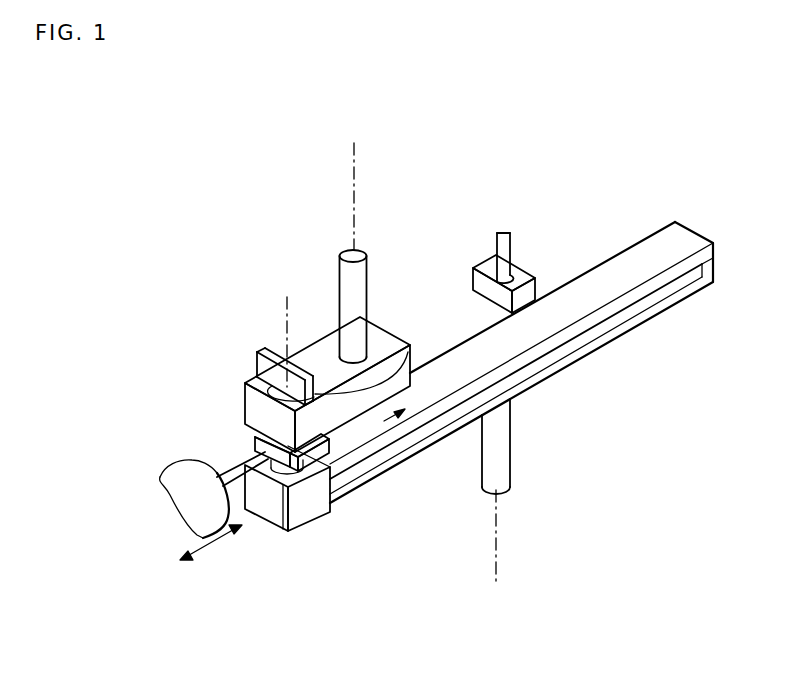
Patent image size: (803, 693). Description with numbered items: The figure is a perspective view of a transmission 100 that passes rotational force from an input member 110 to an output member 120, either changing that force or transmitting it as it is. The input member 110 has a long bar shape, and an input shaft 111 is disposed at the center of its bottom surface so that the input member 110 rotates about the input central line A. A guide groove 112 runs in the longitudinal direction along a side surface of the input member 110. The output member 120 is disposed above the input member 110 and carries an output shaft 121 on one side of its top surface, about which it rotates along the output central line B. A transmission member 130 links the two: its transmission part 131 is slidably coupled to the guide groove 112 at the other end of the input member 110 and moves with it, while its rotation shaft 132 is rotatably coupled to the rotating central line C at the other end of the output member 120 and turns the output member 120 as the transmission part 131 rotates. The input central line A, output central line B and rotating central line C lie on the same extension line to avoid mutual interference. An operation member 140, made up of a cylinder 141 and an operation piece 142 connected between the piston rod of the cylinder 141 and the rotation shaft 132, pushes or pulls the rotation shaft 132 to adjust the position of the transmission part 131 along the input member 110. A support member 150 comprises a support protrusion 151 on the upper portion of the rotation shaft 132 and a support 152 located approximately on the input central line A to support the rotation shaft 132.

The transmission 100 is at (594, 148).
The input member 110 is at (578, 356).
The input shaft 111 is at (503, 440).
The guide groove 112 is at (665, 292).
The output member 120 is at (310, 361).
The output shaft 121 is at (347, 277).
The transmission member 130 is at (227, 620).
The transmission part 131 is at (313, 513).
The rotation shaft 132 is at (281, 531).
The operation member 140 is at (212, 338).
The cylinder 141 is at (198, 455).
The operation piece 142 is at (253, 460).
The support member 150 is at (483, 137).
The support protrusion 151 is at (410, 347).
The support 152 is at (490, 264).